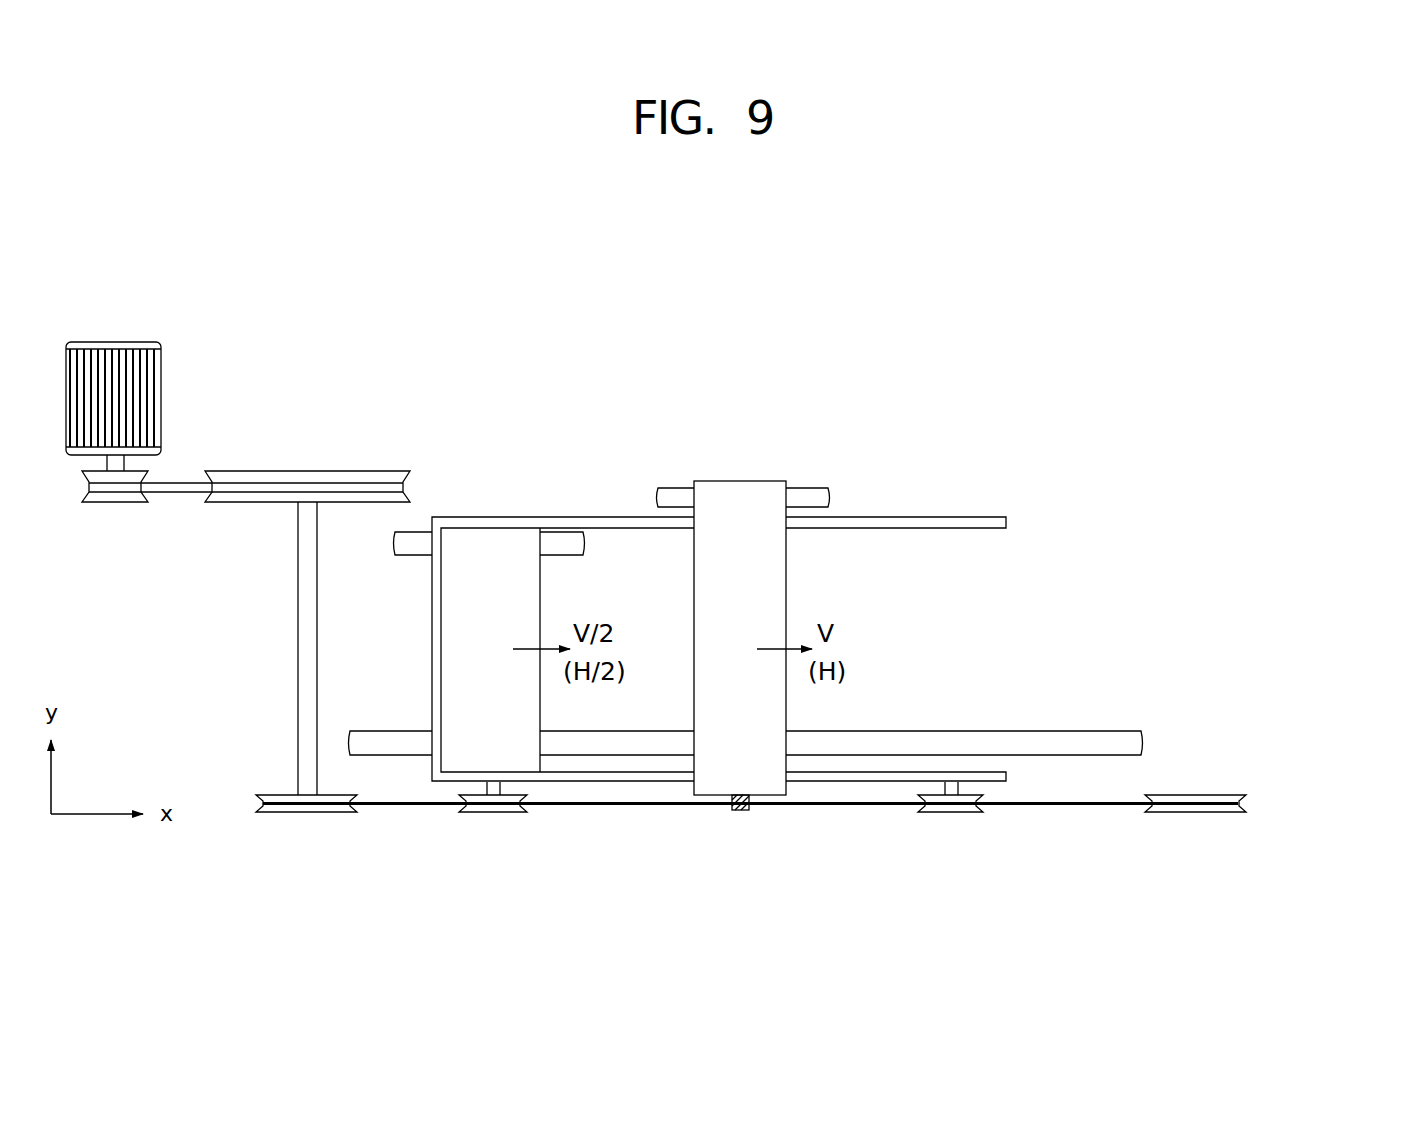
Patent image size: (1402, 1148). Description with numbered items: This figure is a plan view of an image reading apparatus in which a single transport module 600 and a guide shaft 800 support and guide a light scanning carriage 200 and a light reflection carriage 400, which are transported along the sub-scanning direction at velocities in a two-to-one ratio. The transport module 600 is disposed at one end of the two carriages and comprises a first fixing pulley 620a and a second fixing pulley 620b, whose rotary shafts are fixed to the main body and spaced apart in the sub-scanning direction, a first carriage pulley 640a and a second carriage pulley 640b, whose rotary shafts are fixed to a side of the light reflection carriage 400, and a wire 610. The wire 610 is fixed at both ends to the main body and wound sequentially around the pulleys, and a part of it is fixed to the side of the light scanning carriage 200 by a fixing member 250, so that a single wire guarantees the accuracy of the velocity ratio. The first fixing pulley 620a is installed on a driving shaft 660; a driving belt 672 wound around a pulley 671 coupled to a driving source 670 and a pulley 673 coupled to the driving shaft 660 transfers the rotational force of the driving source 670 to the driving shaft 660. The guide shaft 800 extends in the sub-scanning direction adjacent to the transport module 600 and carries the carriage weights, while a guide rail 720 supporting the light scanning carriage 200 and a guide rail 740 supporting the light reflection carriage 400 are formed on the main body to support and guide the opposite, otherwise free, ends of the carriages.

The light scanning carriage 200 is at (738, 482).
The fixing member 250 is at (739, 811).
The light reflection carriage 400 is at (572, 526).
The transport module 600 is at (1268, 800).
The wire 610 is at (1066, 806).
The first fixing pulley 620a is at (269, 813).
The second fixing pulley 620b is at (1196, 813).
The first carriage pulley 640a is at (493, 813).
The second carriage pulley 640b is at (950, 813).
The driving shaft 660 is at (298, 637).
The driving source 670 is at (113, 362).
The pulley 671 is at (113, 503).
The driving belt 672 is at (176, 490).
The pulley 673 is at (308, 477).
The guide rail 720 is at (676, 498).
The guide rail 740 is at (414, 543).
The guide shaft 800 is at (1063, 742).